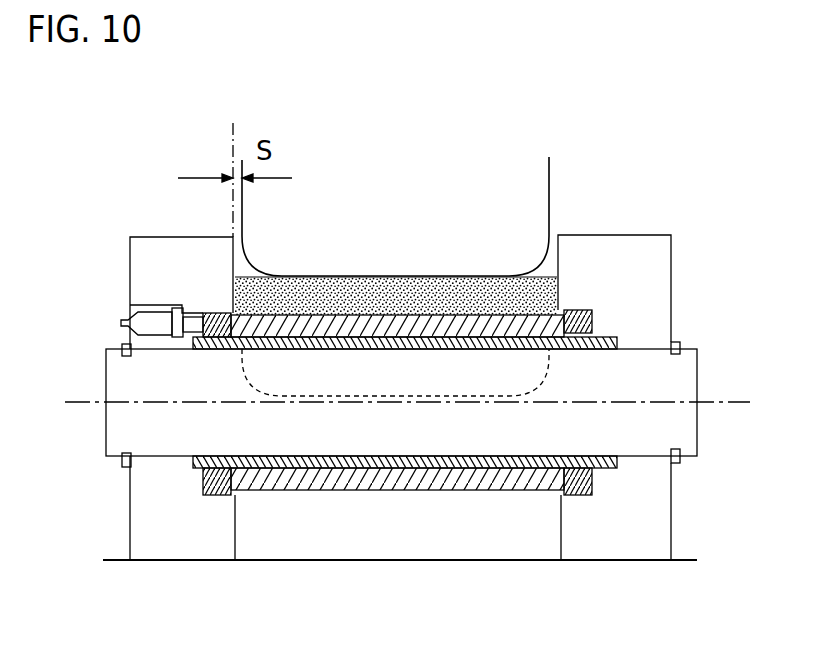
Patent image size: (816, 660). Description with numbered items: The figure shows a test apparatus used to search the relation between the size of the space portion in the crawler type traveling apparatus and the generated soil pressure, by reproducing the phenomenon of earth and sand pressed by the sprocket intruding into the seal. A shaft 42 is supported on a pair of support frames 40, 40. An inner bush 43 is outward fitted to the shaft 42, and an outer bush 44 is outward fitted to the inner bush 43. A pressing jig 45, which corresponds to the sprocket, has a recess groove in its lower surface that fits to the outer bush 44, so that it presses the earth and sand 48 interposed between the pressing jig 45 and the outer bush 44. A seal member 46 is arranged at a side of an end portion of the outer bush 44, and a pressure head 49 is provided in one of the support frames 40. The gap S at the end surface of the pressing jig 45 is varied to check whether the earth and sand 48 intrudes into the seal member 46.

The support frame 40 is at (184, 540).
The shaft 42 is at (675, 435).
The inner bush 43 is at (440, 468).
The outer bush 44 is at (387, 490).
The pressing jig 45 is at (525, 190).
The seal member 46 is at (580, 308).
The earth and sand 48 is at (396, 276).
The pressure head 49 is at (156, 312).